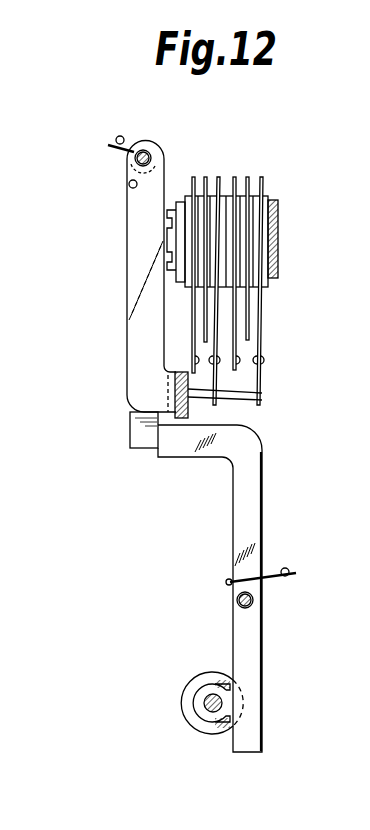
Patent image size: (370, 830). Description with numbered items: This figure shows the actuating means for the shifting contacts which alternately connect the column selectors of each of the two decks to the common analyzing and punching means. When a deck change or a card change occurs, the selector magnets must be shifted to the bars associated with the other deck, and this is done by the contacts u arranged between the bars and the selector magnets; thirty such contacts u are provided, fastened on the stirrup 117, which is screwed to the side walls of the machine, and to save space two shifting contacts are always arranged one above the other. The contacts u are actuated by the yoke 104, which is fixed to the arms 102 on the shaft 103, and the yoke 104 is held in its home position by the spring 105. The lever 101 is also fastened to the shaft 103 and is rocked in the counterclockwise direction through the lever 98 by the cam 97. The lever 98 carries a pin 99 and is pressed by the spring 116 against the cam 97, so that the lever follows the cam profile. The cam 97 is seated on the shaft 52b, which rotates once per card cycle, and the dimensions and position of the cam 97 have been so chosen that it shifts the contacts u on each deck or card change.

The arms 102 is at (140, 260).
The shaft 103 is at (136, 156).
The spring 105 is at (129, 186).
The stirrup 117 is at (279, 279).
The contacts u is at (220, 360).
The yoke 104 is at (175, 391).
The lever 101 is at (143, 438).
The lever 98 is at (247, 635).
The pin 99 is at (237, 600).
The spring 116 is at (278, 585).
The cam 97 is at (202, 690).
The shaft 52b is at (210, 720).